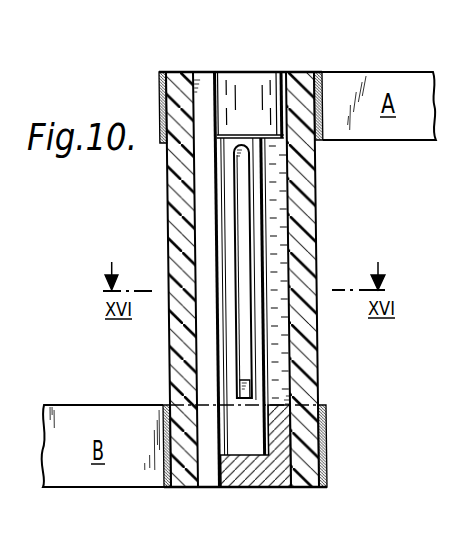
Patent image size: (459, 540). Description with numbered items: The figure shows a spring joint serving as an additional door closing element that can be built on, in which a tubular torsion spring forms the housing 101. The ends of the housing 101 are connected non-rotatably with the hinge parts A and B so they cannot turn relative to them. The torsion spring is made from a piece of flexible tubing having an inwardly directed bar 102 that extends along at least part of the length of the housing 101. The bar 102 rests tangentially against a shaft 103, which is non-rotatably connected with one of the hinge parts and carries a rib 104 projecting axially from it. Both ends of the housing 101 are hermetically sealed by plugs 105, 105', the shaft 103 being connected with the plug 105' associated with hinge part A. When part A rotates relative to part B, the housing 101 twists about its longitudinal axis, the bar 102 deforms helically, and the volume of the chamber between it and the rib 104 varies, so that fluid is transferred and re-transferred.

The housing 101 is at (318, 233).
The bar 102 is at (205, 210).
The shaft 103 is at (260, 340).
The rib 104 is at (242, 366).
The plug 105 is at (255, 470).
The plug 105' is at (266, 75).